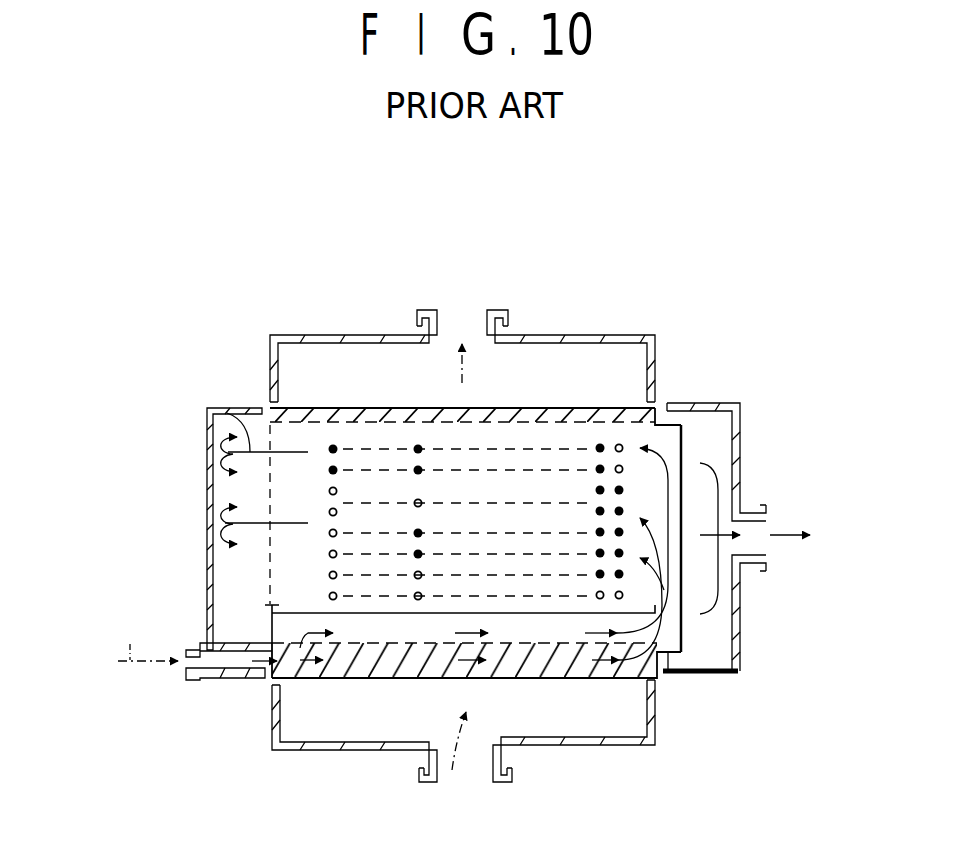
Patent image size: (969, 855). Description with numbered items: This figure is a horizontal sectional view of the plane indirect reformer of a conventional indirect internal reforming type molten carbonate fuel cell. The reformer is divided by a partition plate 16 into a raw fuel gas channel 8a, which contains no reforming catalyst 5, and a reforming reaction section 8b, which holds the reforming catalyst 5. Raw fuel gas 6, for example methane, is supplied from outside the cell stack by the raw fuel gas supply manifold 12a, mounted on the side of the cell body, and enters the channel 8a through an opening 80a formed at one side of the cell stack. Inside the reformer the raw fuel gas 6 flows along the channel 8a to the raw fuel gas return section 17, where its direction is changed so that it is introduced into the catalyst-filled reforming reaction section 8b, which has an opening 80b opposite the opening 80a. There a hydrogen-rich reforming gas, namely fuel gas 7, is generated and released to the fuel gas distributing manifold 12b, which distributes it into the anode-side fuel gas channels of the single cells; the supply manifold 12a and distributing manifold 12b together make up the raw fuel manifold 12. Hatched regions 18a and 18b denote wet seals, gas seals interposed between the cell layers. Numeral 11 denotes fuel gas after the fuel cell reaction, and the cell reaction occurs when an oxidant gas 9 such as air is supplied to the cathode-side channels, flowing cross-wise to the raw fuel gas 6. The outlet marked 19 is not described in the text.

The reforming catalyst 5 is at (620, 445).
The raw fuel gas 6 is at (148, 637).
The fuel gas 7 is at (224, 408).
The raw fuel gas channel 8a is at (540, 630).
The reforming reaction section 8b is at (356, 455).
The oxidant gas 9 is at (451, 581).
The fuel gas after a fuel cell reaction 11 is at (556, 333).
The raw fuel manifold 12 is at (194, 517).
The raw fuel gas supply manifold 12a is at (223, 670).
The fuel gas distributing manifold 12b is at (220, 494).
The partition plate 16 is at (300, 610).
The raw fuel gas return section 17 is at (667, 676).
The wet seal 18a is at (320, 680).
The wet seal 18b is at (522, 408).
The exhaust outlet 19 is at (790, 533).
The opening 80a is at (250, 682).
The opening 80b is at (267, 442).